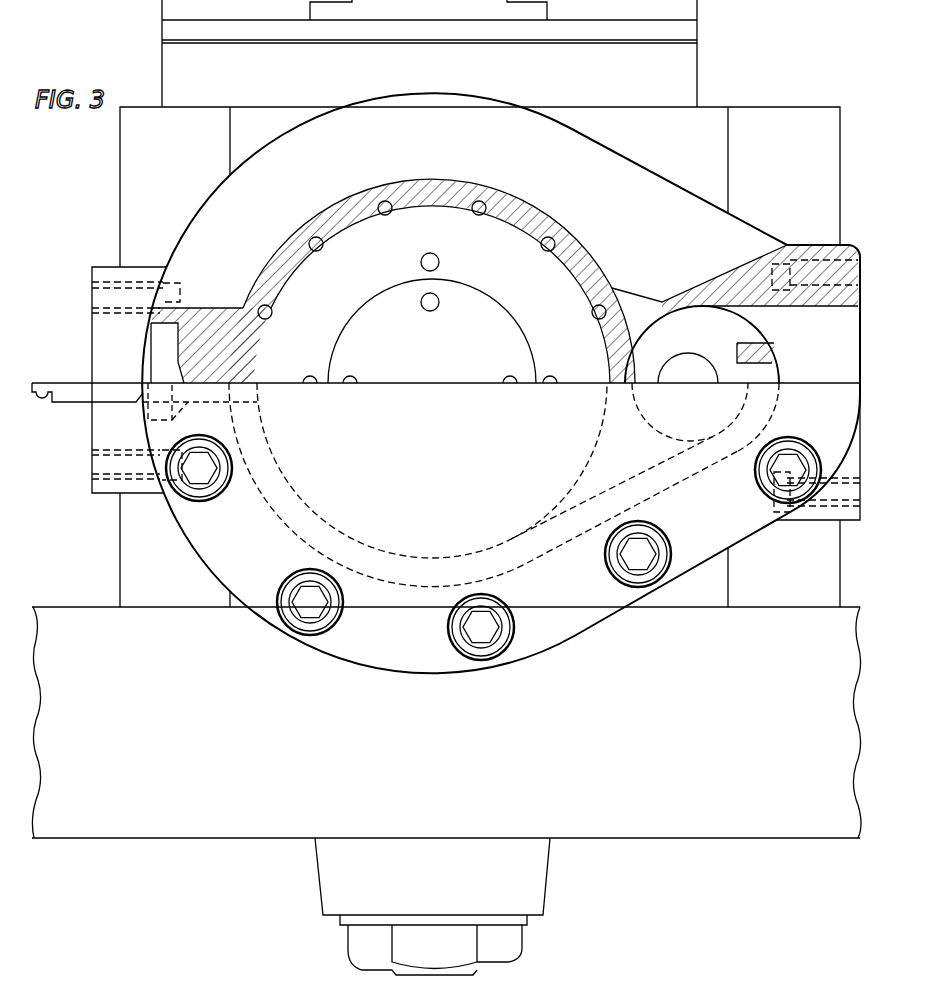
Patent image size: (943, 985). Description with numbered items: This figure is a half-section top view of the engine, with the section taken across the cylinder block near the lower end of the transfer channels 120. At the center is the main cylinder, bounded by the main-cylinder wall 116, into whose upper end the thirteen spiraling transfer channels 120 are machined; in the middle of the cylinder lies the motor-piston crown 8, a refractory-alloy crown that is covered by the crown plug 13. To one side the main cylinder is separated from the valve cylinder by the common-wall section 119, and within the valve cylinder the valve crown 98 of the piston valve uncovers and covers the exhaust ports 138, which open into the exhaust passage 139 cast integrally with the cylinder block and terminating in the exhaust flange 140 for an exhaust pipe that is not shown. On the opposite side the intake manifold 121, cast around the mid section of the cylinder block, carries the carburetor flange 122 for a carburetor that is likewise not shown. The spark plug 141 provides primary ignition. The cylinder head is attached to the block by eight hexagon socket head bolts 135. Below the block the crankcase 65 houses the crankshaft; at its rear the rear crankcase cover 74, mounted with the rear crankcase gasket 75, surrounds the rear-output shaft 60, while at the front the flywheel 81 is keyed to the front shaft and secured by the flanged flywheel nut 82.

The motor-piston crown 8 is at (329, 304).
The crown plug 13 is at (442, 372).
The rear-output shaft 60 is at (414, 11).
The crankcase 65 is at (697, 70).
The rear crankcase cover 74 is at (697, 20).
The rear crankcase gasket 75 is at (697, 42).
The flywheel 81 is at (216, 838).
The flanged flywheel nut 82 is at (348, 930).
The valve crown 98 is at (699, 384).
The main-cylinder wall 116 is at (255, 347).
The common-wall section 119 is at (609, 365).
The transfer channels 120 is at (472, 209).
The intake manifold 121 is at (131, 361).
The carburetor flange 122 is at (92, 268).
The hexagon socket head bolts 135 is at (288, 628).
The exhaust ports 138 is at (773, 340).
The exhaust passage 139 is at (850, 381).
The exhaust flange 140 is at (858, 245).
The spark plug 141 is at (145, 402).